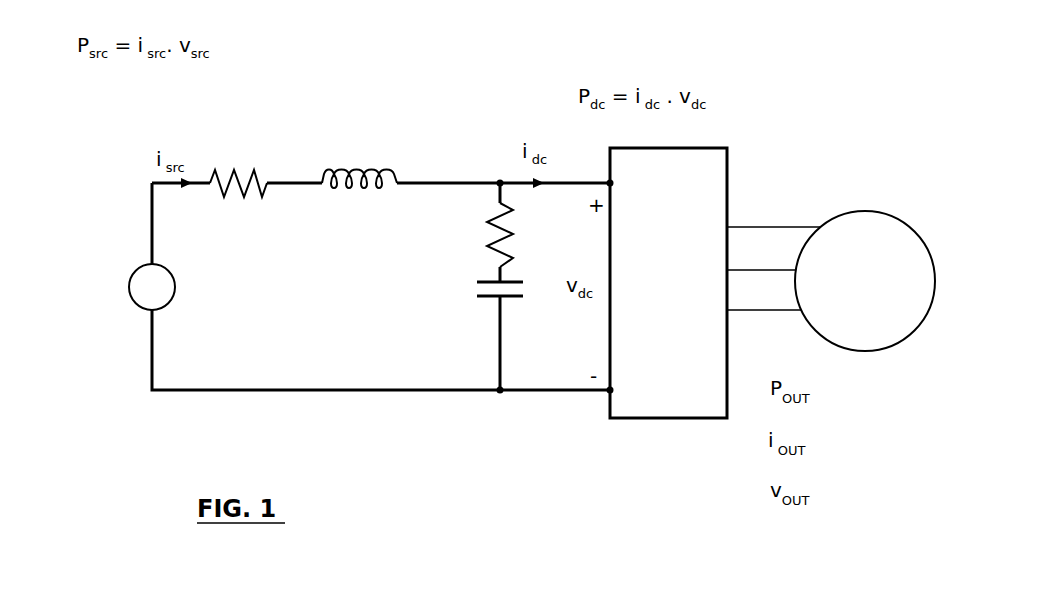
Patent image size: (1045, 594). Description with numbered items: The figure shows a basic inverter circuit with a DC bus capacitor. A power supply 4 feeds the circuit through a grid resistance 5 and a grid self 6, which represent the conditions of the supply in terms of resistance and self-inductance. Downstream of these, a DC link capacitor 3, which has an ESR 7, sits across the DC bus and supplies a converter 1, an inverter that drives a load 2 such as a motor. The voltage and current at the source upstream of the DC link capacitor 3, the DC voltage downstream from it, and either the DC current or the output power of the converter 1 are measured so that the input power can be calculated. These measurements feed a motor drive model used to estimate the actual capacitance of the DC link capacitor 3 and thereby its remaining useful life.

The converter 1 is at (727, 168).
The load 2 is at (885, 211).
The DC link capacitor 3 is at (512, 299).
The power supply 4 is at (130, 272).
The grid resistance 5 is at (258, 172).
The grid self 6 is at (395, 172).
The ESR 7 is at (490, 216).